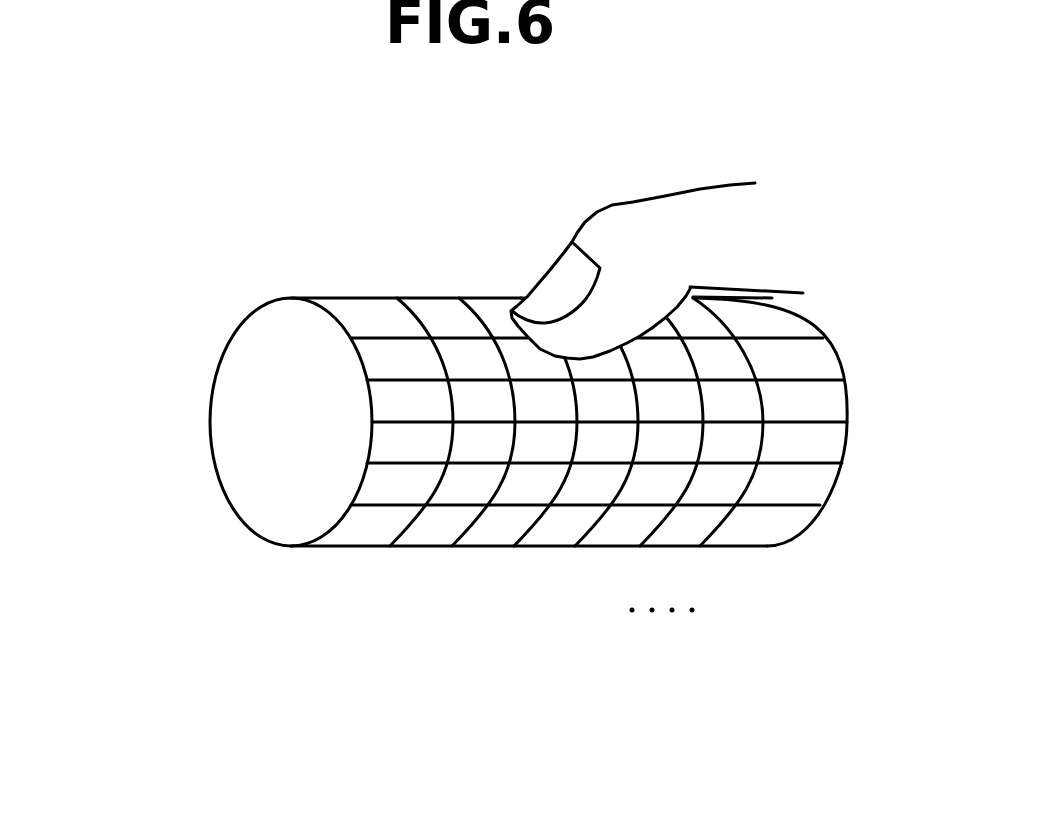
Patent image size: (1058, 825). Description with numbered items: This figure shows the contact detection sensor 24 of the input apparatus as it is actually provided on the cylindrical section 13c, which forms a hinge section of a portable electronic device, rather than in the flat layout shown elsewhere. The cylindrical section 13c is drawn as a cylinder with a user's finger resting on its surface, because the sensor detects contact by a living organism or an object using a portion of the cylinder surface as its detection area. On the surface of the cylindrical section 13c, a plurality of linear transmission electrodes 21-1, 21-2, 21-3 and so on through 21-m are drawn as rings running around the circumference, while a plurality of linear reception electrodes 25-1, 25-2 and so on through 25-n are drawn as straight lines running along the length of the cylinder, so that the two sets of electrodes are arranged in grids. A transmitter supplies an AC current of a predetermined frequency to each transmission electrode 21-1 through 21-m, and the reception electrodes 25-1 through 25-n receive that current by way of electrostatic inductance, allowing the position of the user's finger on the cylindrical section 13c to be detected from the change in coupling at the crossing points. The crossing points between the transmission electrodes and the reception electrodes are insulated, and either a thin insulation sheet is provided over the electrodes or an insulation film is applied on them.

The cylindrical section 13c is at (248, 367).
The contact detection sensor 24 is at (569, 186).
The reception electrode 25-1 is at (363, 339).
The reception electrode 25-2 is at (400, 379).
The reception electrode 25-n is at (360, 507).
The transmission electrode 21-1 is at (422, 523).
The transmission electrode 21-2 is at (474, 530).
The transmission electrode 21-3 is at (548, 522).
The transmission electrode 21-m is at (730, 523).